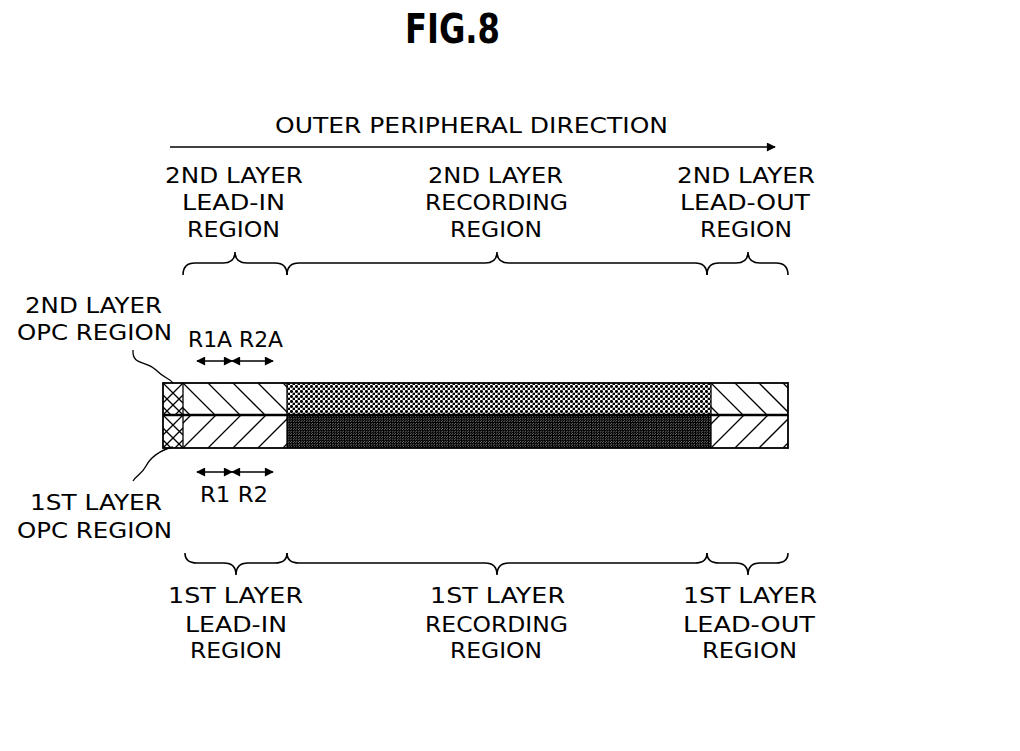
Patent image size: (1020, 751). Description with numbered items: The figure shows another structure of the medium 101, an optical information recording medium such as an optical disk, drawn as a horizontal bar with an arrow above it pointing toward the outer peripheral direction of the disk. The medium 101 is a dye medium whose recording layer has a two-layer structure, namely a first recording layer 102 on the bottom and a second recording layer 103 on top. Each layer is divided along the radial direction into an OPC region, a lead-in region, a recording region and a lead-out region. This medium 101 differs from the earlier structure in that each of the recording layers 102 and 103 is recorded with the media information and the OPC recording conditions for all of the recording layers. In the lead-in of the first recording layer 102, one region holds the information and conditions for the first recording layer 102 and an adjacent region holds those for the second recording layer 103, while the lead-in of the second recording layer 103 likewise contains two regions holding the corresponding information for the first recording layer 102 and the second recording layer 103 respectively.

The medium 101 is at (794, 339).
The first recording layer 102 is at (794, 432).
The second recording layer 103 is at (794, 399).